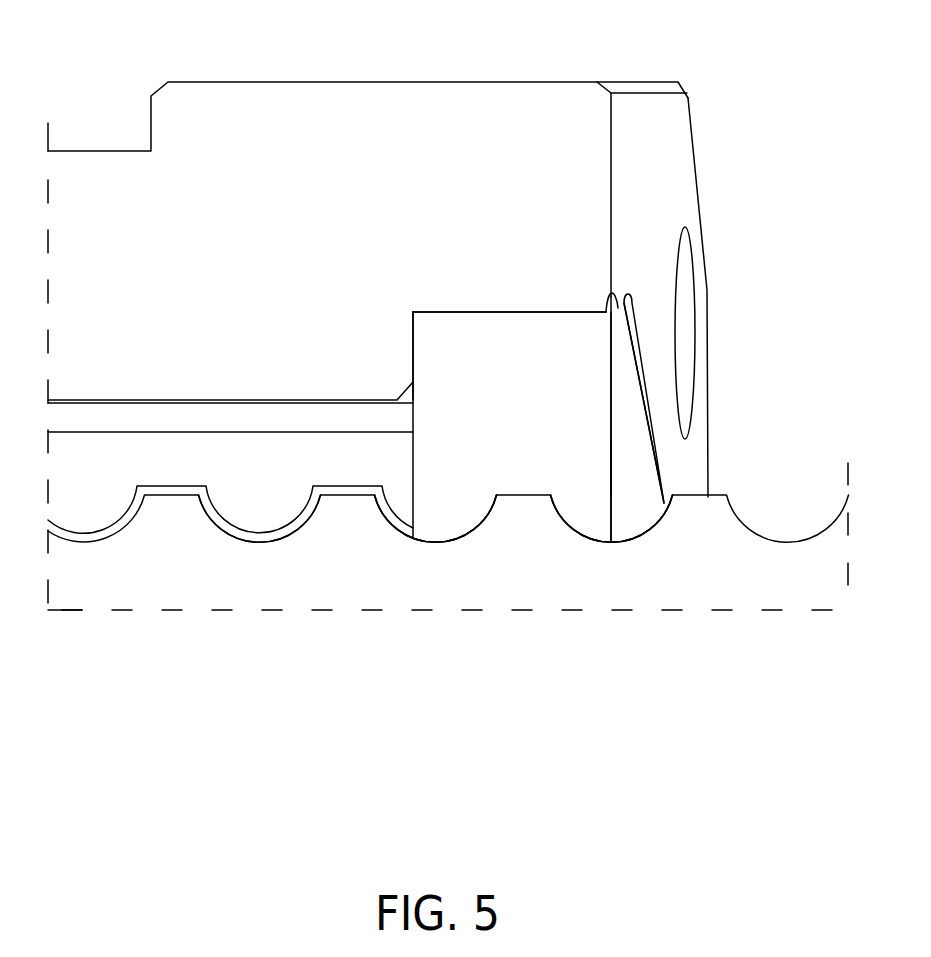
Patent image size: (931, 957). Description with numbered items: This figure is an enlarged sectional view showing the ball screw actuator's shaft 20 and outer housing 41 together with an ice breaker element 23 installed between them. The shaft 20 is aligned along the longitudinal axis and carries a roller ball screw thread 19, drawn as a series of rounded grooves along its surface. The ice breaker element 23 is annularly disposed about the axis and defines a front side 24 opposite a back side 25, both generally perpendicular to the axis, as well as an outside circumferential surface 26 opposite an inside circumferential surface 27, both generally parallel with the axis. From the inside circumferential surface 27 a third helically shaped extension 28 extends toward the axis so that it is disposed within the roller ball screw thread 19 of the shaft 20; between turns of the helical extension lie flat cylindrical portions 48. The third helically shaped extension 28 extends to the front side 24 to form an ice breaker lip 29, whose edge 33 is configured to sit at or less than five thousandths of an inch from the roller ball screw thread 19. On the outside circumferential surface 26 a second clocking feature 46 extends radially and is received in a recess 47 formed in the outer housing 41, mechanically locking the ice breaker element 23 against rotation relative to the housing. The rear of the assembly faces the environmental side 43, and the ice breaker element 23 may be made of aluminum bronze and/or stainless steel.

The roller ball screw thread 19 is at (258, 542).
The shaft 20 is at (343, 583).
The ice breaker element 23 is at (587, 392).
The front side 24 is at (413, 358).
The back side 25 is at (635, 450).
The outside circumferential surface 26 is at (563, 309).
The inside circumferential surface 27 is at (482, 520).
The third helically shaped extension 28 is at (433, 528).
The ice breaker lip 29 is at (613, 497).
The edge 33 is at (612, 542).
The outer housing 41 is at (413, 358).
The environmental side 43 is at (825, 313).
The second clocking feature 46 is at (644, 403).
The recess 47 is at (635, 313).
The flat cylindrical portions 48 is at (170, 487).